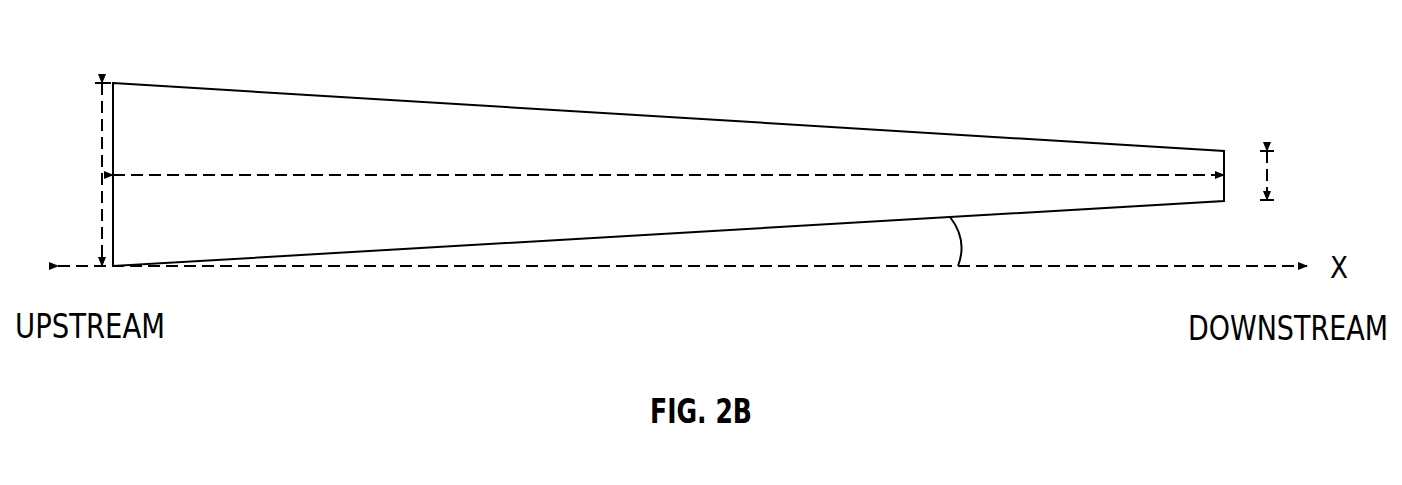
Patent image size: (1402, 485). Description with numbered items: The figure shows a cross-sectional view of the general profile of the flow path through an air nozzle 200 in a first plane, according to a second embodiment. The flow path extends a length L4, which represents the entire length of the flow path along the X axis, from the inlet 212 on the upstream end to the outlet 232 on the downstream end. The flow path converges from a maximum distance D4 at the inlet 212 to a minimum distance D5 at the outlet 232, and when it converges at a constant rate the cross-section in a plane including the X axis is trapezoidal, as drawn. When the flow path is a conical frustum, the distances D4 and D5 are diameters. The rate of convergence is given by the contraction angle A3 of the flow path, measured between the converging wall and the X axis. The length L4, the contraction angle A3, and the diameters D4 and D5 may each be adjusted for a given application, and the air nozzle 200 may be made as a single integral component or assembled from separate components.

The air nozzle 200 is at (148, 60).
The inlet 212 is at (113, 125).
The outlet 232 is at (1226, 158).
The maximum distance D4 is at (102, 178).
The minimum distance D5 is at (1267, 178).
The length L4 is at (207, 176).
The contraction angle A3 is at (961, 242).